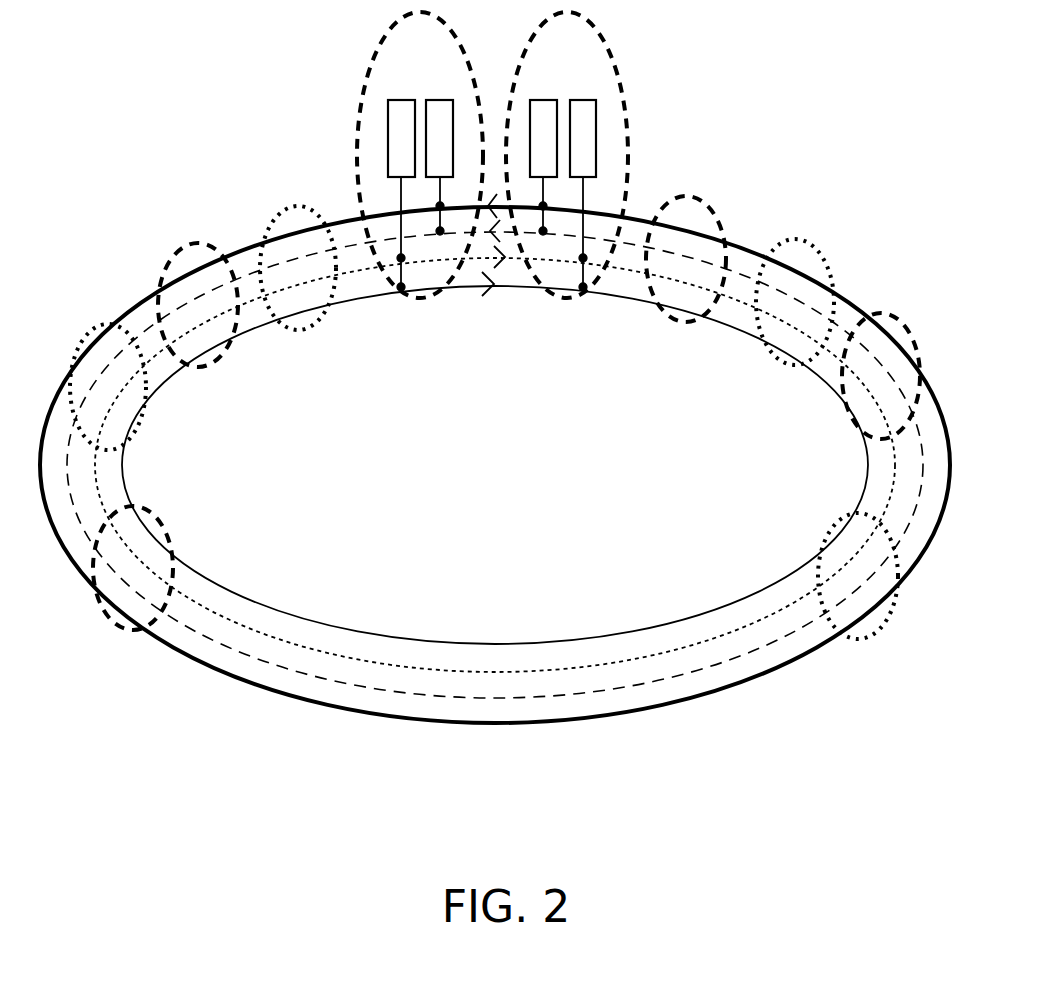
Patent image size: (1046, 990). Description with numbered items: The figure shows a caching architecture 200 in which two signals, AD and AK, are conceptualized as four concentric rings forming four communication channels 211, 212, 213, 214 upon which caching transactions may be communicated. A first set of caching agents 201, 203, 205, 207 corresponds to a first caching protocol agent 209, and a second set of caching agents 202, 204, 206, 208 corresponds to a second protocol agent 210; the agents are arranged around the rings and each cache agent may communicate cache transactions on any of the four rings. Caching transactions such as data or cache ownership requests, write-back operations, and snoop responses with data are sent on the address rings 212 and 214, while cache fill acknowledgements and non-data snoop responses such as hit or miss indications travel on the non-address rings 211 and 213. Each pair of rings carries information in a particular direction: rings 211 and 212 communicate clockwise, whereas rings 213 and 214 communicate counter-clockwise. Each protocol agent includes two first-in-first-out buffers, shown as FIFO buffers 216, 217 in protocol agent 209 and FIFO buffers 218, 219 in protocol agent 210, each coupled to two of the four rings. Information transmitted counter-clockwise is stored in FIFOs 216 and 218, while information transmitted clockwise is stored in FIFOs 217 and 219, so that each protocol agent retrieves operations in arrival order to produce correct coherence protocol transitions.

The caching architecture 200 is at (495, 458).
The caching agent 201 is at (133, 568).
The caching agent 202 is at (108, 387).
The caching agent 203 is at (198, 305).
The caching agent 204 is at (298, 268).
The caching agent 205 is at (686, 259).
The caching agent 206 is at (795, 302).
The caching agent 207 is at (881, 376).
The caching agent 208 is at (858, 576).
The first caching protocol agent 209 is at (383, 155).
The second caching protocol agent 210 is at (608, 155).
The communication channel ring 211 is at (495, 467).
The communication channel ring 212 is at (495, 465).
The communication channel ring 213 is at (495, 466).
The communication channel ring 214 is at (495, 465).
The first-in-first-out buffer 216 is at (380, 124).
The first-in-first-out buffer 217 is at (430, 153).
The first-in-first-out buffer 218 is at (596, 118).
The first-in-first-out buffer 219 is at (556, 145).